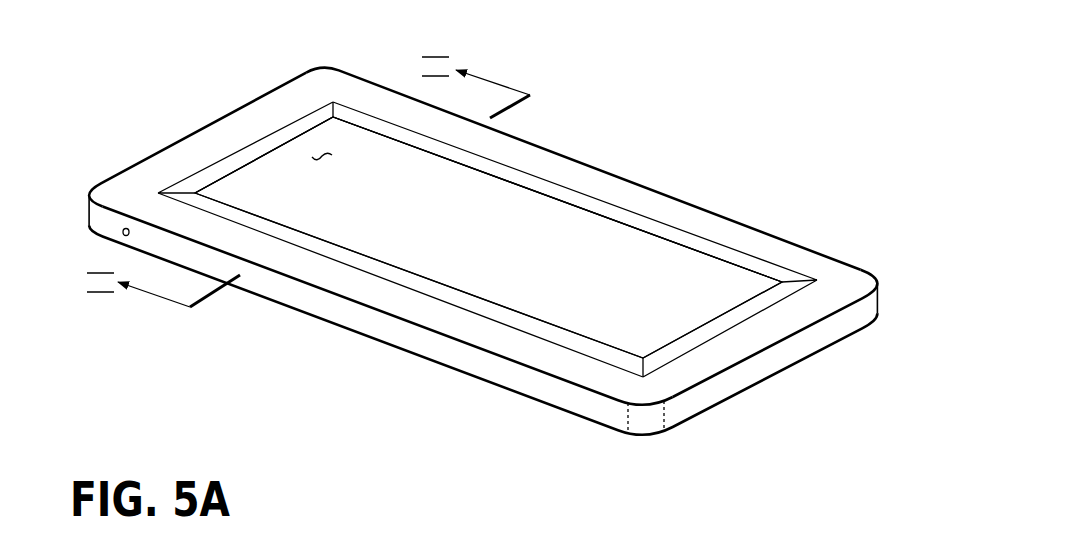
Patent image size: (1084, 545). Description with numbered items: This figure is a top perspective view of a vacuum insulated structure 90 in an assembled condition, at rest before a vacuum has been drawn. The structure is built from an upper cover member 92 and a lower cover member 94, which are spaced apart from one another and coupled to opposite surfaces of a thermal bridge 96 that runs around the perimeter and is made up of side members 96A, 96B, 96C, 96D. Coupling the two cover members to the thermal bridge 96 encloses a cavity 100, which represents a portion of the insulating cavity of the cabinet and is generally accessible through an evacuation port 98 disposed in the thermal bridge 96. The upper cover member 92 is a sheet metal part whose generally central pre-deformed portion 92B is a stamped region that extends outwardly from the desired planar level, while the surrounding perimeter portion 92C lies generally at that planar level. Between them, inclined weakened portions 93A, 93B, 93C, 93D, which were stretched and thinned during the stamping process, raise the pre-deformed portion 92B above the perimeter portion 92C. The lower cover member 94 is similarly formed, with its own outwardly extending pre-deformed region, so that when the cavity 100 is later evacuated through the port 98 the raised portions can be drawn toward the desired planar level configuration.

The vacuum insulated structure 90 is at (621, 96).
The upper cover member 92 is at (658, 210).
The pre-deformed portion 92B is at (520, 220).
The perimeter portion 92C is at (122, 177).
The weakened portion 93A is at (717, 252).
The weakened portion 93B is at (735, 313).
The weakened portion 93C is at (347, 255).
The weakened portion 93D is at (237, 161).
The lower cover member 94 is at (547, 407).
The thermal bridge 96 is at (901, 276).
The side member 96A is at (812, 242).
The side member 96B is at (740, 372).
The side member 96C is at (425, 343).
The side member 96D is at (168, 157).
The evacuation port 98 is at (126, 228).
The cavity 100 is at (325, 147).